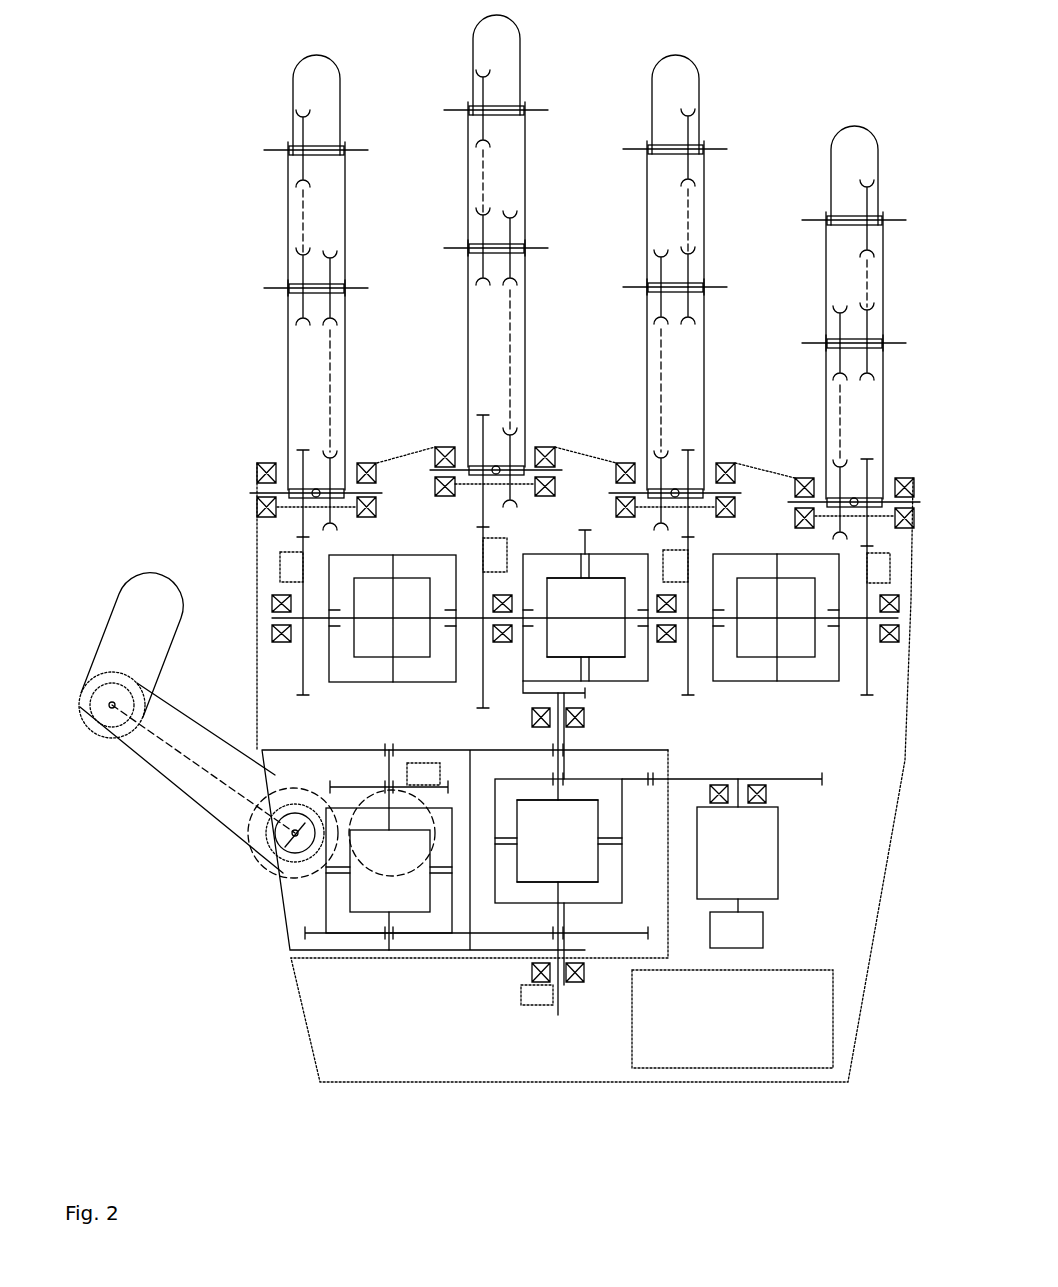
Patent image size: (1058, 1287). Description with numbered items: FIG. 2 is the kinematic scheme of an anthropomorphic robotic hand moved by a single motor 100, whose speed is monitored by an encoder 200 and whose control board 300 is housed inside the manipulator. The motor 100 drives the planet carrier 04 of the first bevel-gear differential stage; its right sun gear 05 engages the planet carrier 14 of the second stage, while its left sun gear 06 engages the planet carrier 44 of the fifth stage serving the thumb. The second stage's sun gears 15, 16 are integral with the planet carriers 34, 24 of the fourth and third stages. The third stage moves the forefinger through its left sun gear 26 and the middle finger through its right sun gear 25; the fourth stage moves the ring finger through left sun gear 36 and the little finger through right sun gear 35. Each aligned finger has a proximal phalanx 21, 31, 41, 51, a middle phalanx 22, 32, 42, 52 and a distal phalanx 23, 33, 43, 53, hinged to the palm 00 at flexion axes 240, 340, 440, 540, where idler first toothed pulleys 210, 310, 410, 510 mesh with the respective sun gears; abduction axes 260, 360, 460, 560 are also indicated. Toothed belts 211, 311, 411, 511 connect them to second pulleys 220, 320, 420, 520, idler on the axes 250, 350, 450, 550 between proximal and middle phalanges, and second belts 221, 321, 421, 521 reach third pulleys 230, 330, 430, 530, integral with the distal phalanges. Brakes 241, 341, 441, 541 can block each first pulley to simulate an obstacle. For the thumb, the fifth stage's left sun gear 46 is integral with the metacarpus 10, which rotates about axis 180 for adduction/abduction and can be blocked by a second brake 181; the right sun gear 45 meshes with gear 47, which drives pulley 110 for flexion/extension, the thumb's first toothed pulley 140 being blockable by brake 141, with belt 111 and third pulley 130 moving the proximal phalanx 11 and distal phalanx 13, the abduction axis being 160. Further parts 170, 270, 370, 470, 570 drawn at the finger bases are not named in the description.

The palm 00 is at (873, 996).
The metacarpus 10 is at (278, 916).
The proximal phalanx of the thumb 11 is at (158, 775).
The distal phalanx of the thumb 13 is at (100, 622).
The planet carrier of the second differential stage 14 is at (618, 684).
The right sun gear of the second stage 15 is at (617, 625).
The left sun gear of the second stage 16 is at (552, 612).
The proximal phalanx 21 is at (286, 352).
The middle phalanx 22 is at (287, 217).
The distal phalanx 23 is at (294, 103).
The planet carrier of the third stage 24 is at (378, 684).
The right sun gear of the third differential stage 25 is at (480, 688).
The left sun gear of the third differential stage 26 is at (305, 688).
The proximal phalanx of the middle finger 31 is at (466, 322).
The middle phalanx of the middle finger 32 is at (467, 177).
The distal phalanx of the middle finger 33 is at (472, 62).
The planet carrier of the fourth stage 34 is at (762, 684).
The right sun gear of the fourth stage 35 is at (865, 688).
The left sun gear of the fourth stage 36 is at (690, 688).
The proximal phalanx of the ring finger 41 is at (646, 347).
The middle phalanx of the ring finger 42 is at (646, 216).
The distal phalanx of the ring finger 43 is at (652, 102).
The planet carrier of the fifth differential stage 44 is at (312, 937).
The right sun gear of the fifth stage 45 is at (378, 836).
The left sun gear of the fifth stage 46 is at (398, 905).
The gear 47 is at (356, 800).
The proximal phalanx of the little finger 51 is at (825, 397).
The middle phalanx of the little finger 52 is at (825, 267).
The distal phalanx of the little finger 53 is at (832, 173).
The planet carrier of the first differential stage 04 is at (612, 780).
The right sun gear of the first differential stage 05 is at (543, 805).
The left sun gear of the first differential stage 06 is at (568, 878).
The motor 100 is at (816, 790).
The pulley of the thumb 110 is at (265, 812).
The toothed belt of the thumb 111 is at (170, 740).
The third pulley of the thumb 130 is at (90, 712).
The first toothed pulley of the thumb 140 is at (285, 855).
The brake 141 is at (440, 782).
The axis of rotation z of the thumb 160 is at (108, 708).
The thumb joint pin 170 is at (296, 808).
The axis 180 is at (562, 1012).
The second brake 181 is at (521, 998).
The encoder 200 is at (772, 927).
The first toothed pulley 210 is at (300, 468).
The toothed belt 211 is at (332, 380).
The second toothed pulley 220 is at (332, 273).
The second toothed belt 221 is at (306, 212).
The third toothed pulley 230 is at (307, 128).
The axis of rotation 240 is at (256, 474).
The brake 241 is at (280, 565).
The relative axis of rotation 250 is at (262, 287).
The axis of rotation z of the forefinger 260 is at (262, 149).
The index finger base coupling 270 is at (335, 488).
The control board 300 is at (632, 1046).
The first pulley of the middle finger 310 is at (481, 440).
The toothed belt of the middle finger 311 is at (512, 340).
The second pulley of the middle finger 320 is at (512, 233).
The second toothed belt of the middle finger 321 is at (485, 172).
The third pulley of the middle finger 330 is at (486, 92).
The first toothed pulley of the middle finger 340 is at (437, 448).
The brake 341 is at (507, 552).
The axis of rotation of the middle finger 350 is at (442, 247).
The axis of rotation z of the middle finger 360 is at (443, 109).
The middle finger base coupling 370 is at (512, 462).
The first pulley of the ring finger 410 is at (660, 455).
The toothed belt of the ring finger 411 is at (664, 385).
The second pulley of the ring finger 420 is at (690, 275).
The second toothed belt of the ring finger 421 is at (691, 220).
The third pulley of the ring finger 430 is at (692, 130).
The first toothed pulley of the ring finger 440 is at (616, 470).
The brake 441 is at (663, 553).
The axis of rotation of the ring finger 450 is at (621, 286).
The axis of rotation z of the ring finger 460 is at (621, 148).
The ring finger base shaft 470 is at (690, 488).
The first pulley of the little finger 510 is at (836, 485).
The toothed belt of the little finger 511 is at (843, 425).
The second pulley of the little finger 520 is at (870, 336).
The second toothed belt of the little finger 521 is at (870, 290).
The third pulley of the little finger 530 is at (870, 195).
The axis x of the little finger 540 is at (912, 500).
The brake 541 is at (890, 565).
The axis of rotation of the little finger 550 is at (801, 343).
The axis of rotation z of the little finger 560 is at (802, 219).
The little finger base shaft 570 is at (869, 493).